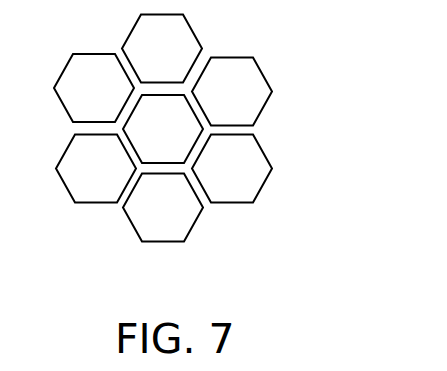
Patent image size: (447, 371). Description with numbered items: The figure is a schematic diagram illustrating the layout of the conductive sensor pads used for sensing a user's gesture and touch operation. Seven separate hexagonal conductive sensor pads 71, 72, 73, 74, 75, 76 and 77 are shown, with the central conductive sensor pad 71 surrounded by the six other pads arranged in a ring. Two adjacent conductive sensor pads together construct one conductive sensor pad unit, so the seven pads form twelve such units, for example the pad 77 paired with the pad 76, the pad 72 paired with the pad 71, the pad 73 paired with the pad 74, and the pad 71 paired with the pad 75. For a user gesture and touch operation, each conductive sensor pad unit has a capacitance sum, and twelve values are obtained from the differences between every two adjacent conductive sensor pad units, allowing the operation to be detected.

The conductive sensor pad 71 is at (163, 129).
The conductive sensor pad 72 is at (162, 49).
The conductive sensor pad 73 is at (232, 92).
The conductive sensor pad 74 is at (232, 169).
The conductive sensor pad 75 is at (163, 208).
The conductive sensor pad 76 is at (96, 169).
The conductive sensor pad 77 is at (94, 88).